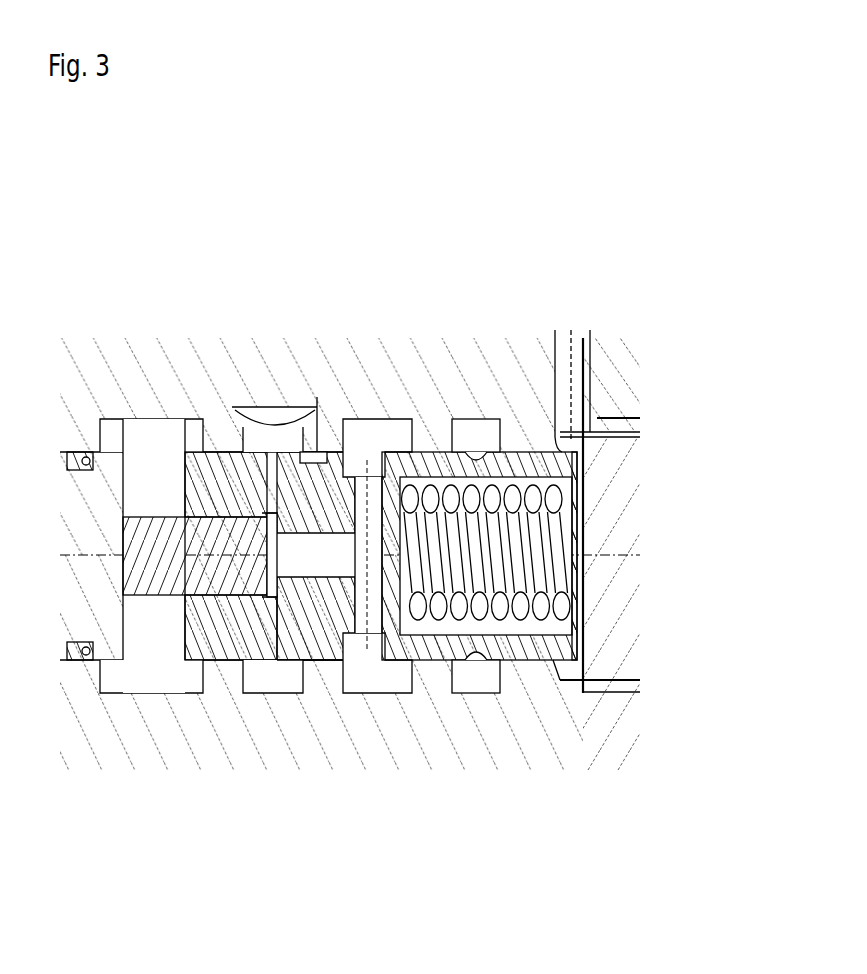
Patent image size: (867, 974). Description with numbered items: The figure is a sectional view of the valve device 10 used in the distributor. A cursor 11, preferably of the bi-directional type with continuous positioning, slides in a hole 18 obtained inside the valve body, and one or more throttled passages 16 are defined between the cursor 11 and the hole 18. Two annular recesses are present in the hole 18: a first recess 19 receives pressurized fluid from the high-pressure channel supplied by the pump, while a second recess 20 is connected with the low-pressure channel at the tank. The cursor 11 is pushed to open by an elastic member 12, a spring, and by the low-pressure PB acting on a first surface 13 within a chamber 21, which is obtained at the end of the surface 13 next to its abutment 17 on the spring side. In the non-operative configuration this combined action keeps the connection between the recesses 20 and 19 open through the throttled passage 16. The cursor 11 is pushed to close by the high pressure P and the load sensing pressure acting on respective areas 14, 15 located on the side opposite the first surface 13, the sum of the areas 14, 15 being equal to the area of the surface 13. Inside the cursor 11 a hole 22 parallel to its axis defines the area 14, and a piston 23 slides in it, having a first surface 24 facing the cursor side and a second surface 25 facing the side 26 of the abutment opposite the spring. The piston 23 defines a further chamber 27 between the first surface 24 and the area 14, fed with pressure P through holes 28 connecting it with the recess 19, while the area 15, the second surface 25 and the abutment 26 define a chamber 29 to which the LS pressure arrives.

The valve device 10 is at (477, 262).
The cursor 11 is at (443, 465).
The elastic member 12 is at (527, 470).
The first surface 13 is at (583, 430).
The area 14 is at (278, 520).
The area 15 is at (185, 452).
The throttled passage 16 is at (307, 457).
The abutment 17 is at (590, 440).
The hole 18 is at (333, 463).
The first recess 19 is at (362, 663).
The second recess 20 is at (290, 677).
The chamber 21 is at (581, 575).
The hole 22 is at (267, 553).
The piston 23 is at (224, 542).
The first surface 24 is at (270, 572).
The second surface 25 is at (127, 523).
The side of the abutment 26 is at (123, 452).
The further chamber 27 is at (298, 668).
The holes 28 is at (373, 600).
The chamber 29 is at (150, 622).